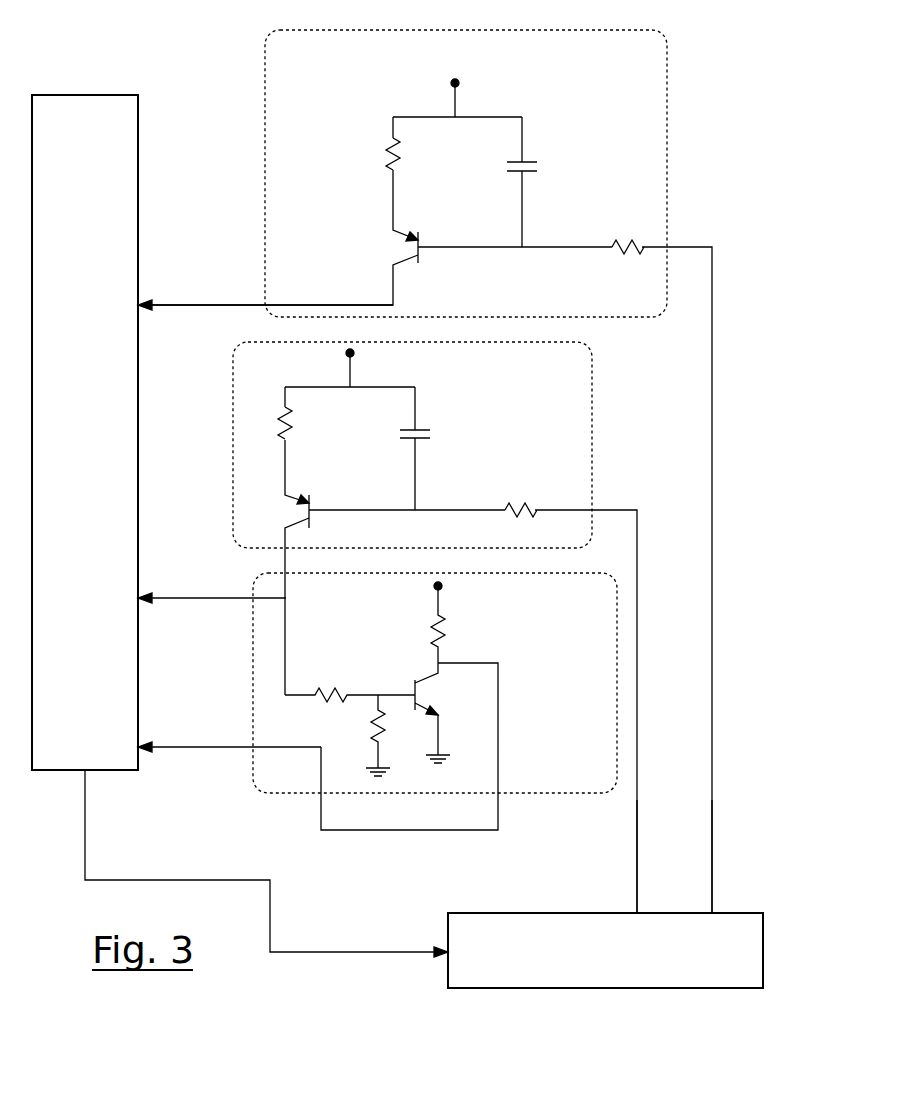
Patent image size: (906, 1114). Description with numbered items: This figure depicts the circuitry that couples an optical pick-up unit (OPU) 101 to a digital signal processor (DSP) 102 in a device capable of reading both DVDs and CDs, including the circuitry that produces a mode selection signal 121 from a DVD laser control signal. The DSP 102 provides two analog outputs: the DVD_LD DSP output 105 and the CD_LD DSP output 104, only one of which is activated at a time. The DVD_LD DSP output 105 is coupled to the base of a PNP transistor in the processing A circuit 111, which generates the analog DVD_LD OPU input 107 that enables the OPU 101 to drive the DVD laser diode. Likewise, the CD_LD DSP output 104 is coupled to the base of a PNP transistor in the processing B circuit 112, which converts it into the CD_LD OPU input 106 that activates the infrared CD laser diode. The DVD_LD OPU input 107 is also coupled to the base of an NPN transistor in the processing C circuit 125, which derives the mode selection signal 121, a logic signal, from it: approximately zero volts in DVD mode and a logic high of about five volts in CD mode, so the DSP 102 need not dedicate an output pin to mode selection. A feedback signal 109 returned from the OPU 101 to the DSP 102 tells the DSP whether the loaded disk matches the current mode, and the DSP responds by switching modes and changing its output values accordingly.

The optical pick-up unit (OPU) 101 is at (85, 432).
The digital signal processor (DSP) 102 is at (605, 950).
The CD_LD DSP output 104 is at (761, 856).
The DVD_LD DSP output 105 is at (585, 856).
The CD_LD OPU input 106 is at (265, 276).
The DVD_LD OPU input 107 is at (212, 570).
The feedback signal 109 is at (266, 863).
The processing A circuit 111 is at (435, 624).
The processing B circuit 112 is at (425, 471).
The mode selection signal 121 is at (229, 718).
The processing C circuit 125 is at (435, 701).